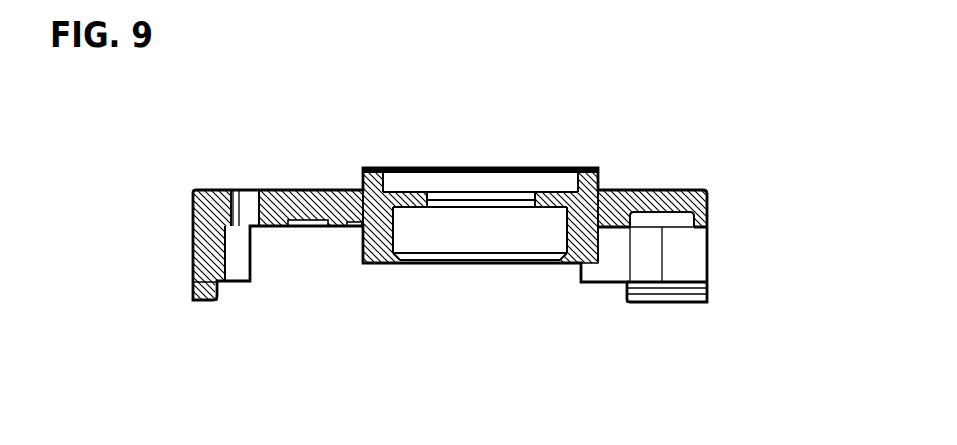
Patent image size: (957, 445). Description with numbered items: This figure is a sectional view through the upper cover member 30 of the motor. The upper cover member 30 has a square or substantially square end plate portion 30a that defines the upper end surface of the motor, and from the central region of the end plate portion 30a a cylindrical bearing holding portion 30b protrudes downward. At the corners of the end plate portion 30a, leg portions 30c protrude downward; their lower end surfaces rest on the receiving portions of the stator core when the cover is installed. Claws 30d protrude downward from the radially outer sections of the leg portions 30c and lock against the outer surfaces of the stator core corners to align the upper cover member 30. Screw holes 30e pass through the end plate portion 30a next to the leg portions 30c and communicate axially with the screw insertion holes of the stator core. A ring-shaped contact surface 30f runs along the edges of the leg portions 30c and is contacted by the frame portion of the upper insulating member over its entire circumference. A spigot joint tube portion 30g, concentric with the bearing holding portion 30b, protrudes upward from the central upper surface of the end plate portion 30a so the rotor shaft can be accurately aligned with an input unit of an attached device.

The upper cover member 30 is at (661, 173).
The end plate portion 30a is at (291, 193).
The bearing holding portion 30b is at (364, 247).
The leg portion 30c is at (193, 235).
The claw 30d is at (198, 302).
The screw hole 30e is at (247, 203).
The contact surface 30f is at (707, 235).
The spigot joint tube portion 30g is at (595, 170).